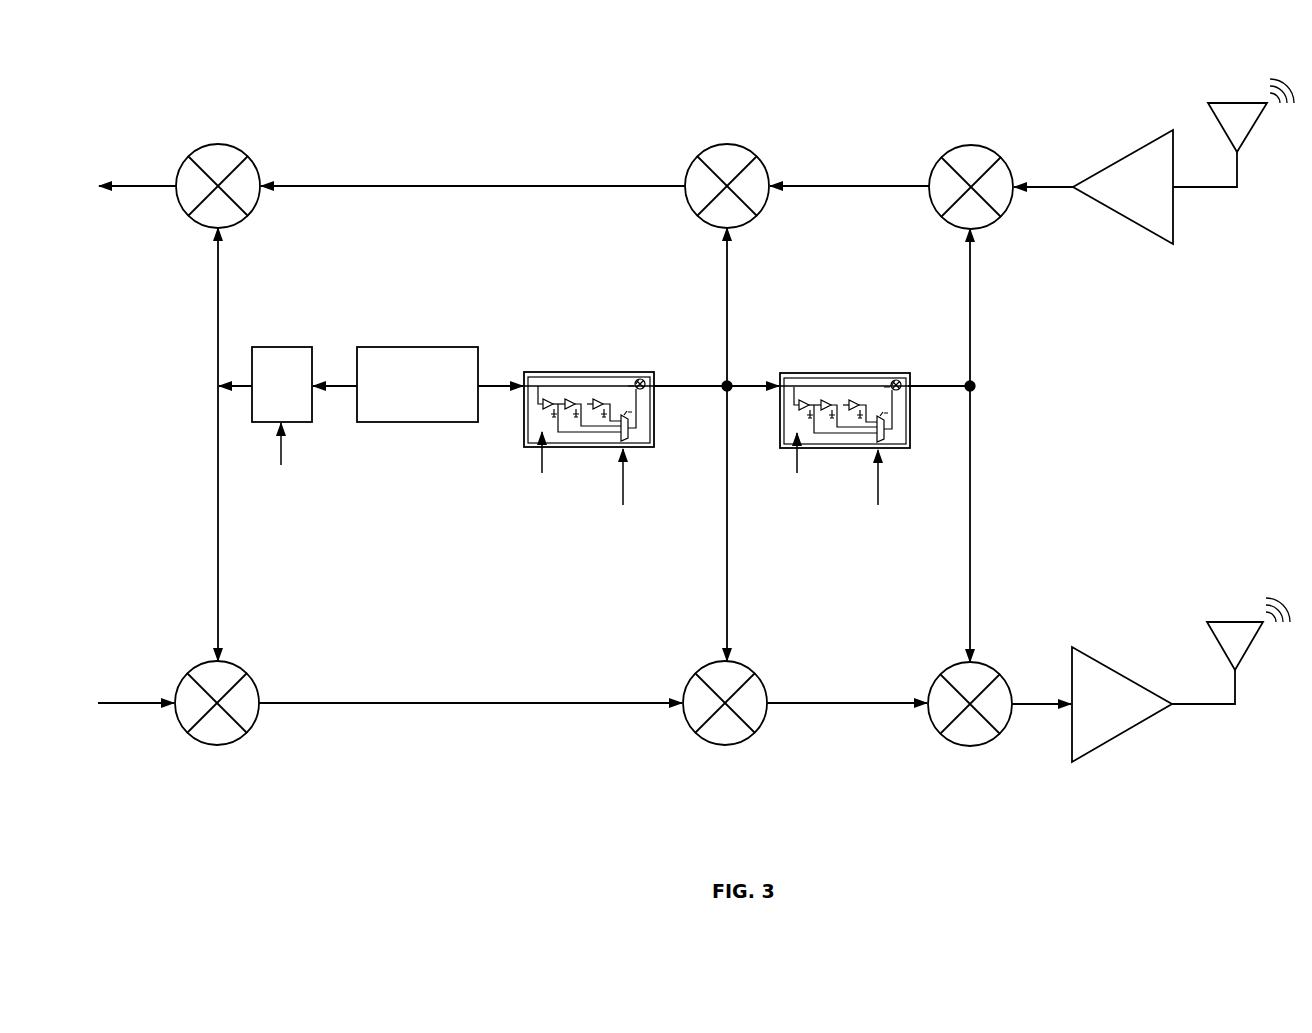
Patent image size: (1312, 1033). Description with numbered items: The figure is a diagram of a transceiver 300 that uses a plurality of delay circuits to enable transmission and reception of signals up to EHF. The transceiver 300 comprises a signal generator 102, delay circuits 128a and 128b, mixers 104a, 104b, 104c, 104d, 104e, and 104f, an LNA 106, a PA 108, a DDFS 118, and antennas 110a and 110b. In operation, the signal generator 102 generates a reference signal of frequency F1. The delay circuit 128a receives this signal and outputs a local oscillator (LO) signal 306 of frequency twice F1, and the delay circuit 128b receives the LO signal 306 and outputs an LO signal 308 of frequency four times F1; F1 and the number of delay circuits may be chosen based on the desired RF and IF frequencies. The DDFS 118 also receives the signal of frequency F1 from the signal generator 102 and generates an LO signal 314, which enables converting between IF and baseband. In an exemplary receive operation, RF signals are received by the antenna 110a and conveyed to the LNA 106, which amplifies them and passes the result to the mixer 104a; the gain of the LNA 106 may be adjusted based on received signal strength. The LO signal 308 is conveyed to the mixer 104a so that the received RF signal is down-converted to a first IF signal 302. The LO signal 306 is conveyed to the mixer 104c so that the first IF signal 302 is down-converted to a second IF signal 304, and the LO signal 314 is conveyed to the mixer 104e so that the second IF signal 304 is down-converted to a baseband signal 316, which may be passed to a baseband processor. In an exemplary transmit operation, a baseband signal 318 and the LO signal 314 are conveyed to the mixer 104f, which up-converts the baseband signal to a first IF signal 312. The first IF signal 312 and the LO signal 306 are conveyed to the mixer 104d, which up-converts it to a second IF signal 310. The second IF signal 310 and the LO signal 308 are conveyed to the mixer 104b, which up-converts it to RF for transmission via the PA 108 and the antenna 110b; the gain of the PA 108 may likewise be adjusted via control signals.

The transceiver 300 is at (394, 70).
The signal generator 102 is at (444, 347).
The mixer 104a is at (961, 145).
The mixer 104b is at (947, 665).
The mixer 104c is at (717, 145).
The mixer 104d is at (705, 665).
The mixer 104e is at (222, 145).
The mixer 104f is at (197, 665).
The LNA 106 is at (1126, 154).
The PA 108 is at (1102, 665).
The antenna 110a is at (1230, 102).
The antenna 110b is at (1223, 624).
The DDFS 118 is at (280, 347).
The delay circuit 128a is at (552, 373).
The delay circuit 128b is at (808, 373).
The first IF signal 302 is at (911, 181).
The second IF signal 304 is at (616, 181).
The local oscillator (LO) signal 306 is at (698, 384).
The local oscillator (LO) signal 308 is at (953, 384).
The second IF signal 310 is at (885, 702).
The first IF signal 312 is at (582, 702).
The LO signal 314 is at (217, 356).
The baseband signal 316 is at (156, 178).
The baseband signal 318 is at (143, 698).